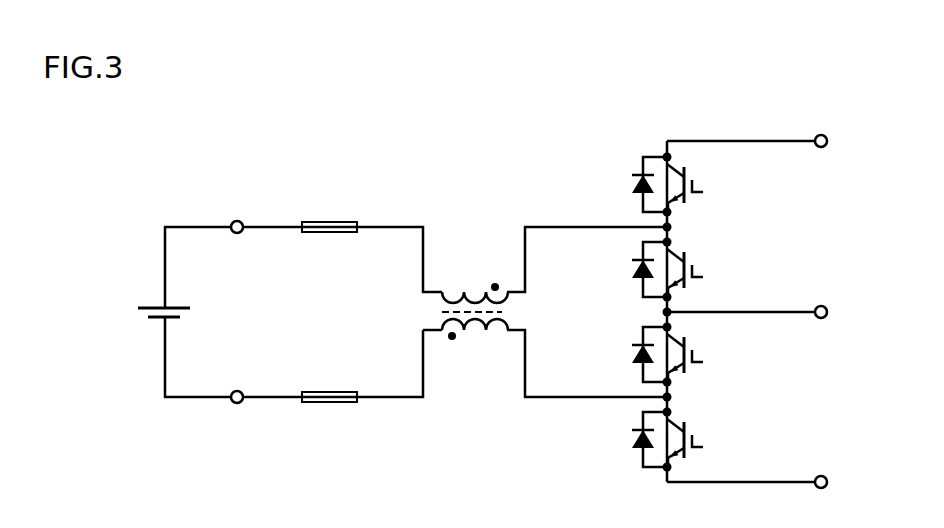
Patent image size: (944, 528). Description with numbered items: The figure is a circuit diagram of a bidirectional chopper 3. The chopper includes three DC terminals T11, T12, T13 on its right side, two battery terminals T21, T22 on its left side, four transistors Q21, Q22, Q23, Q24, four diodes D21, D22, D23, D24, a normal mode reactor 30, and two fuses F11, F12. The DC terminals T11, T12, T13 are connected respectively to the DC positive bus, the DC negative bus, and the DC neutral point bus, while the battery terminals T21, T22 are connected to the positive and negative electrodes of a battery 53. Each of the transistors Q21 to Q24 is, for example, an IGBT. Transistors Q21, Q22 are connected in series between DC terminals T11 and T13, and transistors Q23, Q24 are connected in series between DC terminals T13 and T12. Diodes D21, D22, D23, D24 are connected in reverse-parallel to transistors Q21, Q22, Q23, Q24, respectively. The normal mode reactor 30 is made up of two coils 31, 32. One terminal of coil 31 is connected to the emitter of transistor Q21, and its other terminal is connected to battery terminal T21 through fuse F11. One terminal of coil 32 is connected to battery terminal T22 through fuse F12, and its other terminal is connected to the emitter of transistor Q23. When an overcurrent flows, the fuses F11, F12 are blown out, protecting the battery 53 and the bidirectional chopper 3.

The bidirectional chopper 3 is at (205, 134).
The battery 53 is at (157, 305).
The normal mode reactor 30 is at (416, 312).
The coil 31 is at (447, 302).
The coil 32 is at (447, 325).
The battery terminal T21 is at (238, 220).
The battery terminal T22 is at (238, 404).
The fuse F11 is at (328, 221).
The fuse F12 is at (328, 404).
The DC terminal T11 is at (823, 135).
The DC terminal T12 is at (823, 476).
The DC terminal T13 is at (823, 306).
The diode D21 is at (628, 183).
The diode D22 is at (628, 268).
The diode D23 is at (628, 353).
The diode D24 is at (628, 438).
The transistor Q21 is at (703, 190).
The transistor Q22 is at (703, 275).
The transistor Q23 is at (703, 360).
The transistor Q24 is at (703, 445).